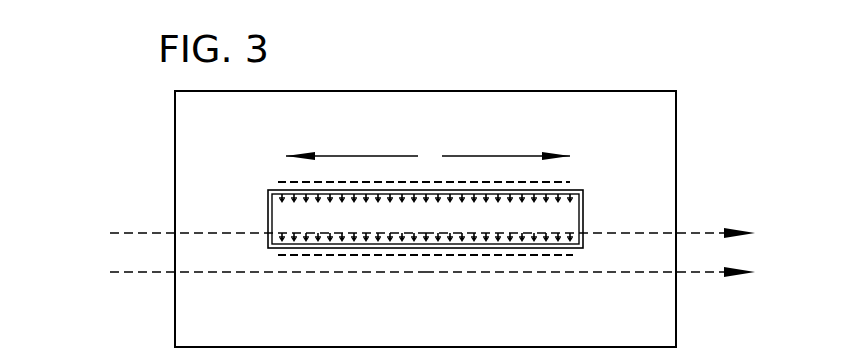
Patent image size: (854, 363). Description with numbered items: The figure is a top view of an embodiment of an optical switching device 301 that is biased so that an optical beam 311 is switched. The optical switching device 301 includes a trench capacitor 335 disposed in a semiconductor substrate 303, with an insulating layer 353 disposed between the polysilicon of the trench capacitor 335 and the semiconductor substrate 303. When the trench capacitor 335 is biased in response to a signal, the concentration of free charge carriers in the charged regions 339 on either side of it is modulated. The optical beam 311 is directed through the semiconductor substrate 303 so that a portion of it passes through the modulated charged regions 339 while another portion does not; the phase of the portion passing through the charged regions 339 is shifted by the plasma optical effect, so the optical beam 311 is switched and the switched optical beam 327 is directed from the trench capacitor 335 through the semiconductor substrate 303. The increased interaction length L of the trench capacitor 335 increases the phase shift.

The optical switching device 301 is at (473, 80).
The semiconductor substrate 303 is at (563, 97).
The optical beam 311 is at (92, 213).
The switched optical beam 327 is at (766, 208).
The trench capacitor 335 is at (567, 238).
The charged regions 339 is at (271, 182).
The insulating layer 353 is at (583, 190).